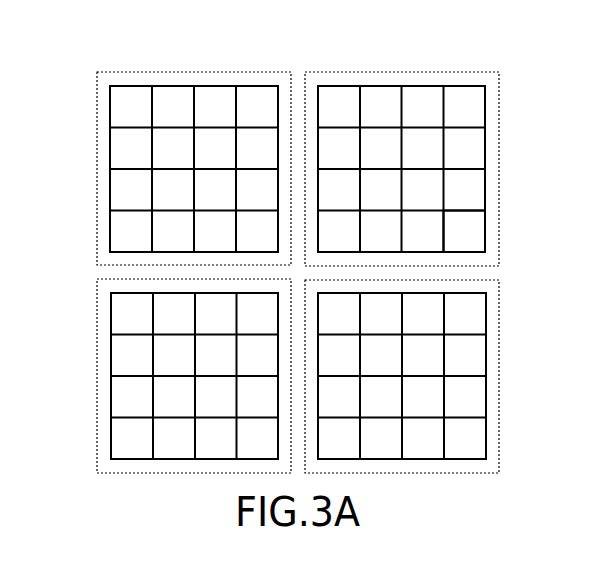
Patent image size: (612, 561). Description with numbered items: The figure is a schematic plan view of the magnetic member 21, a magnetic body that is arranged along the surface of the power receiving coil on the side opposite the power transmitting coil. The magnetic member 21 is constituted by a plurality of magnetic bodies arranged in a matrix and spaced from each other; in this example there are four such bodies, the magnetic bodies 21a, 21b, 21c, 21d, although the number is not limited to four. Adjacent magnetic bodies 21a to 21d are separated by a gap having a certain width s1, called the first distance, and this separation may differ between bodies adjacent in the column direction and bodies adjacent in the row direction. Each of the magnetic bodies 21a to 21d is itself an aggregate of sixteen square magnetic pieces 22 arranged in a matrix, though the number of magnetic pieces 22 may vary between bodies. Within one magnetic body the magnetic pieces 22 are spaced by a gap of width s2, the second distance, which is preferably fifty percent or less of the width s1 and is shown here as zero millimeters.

The magnetic member 21 is at (468, 62).
The magnetic body 21a is at (97, 170).
The magnetic body 21b is at (97, 380).
The magnetic body 21c is at (499, 170).
The magnetic body 21d is at (499, 376).
The magnetic piece 22 is at (478, 237).
The width of gap between magnetic bodies (first distance) s1 is at (317, 100).
The width of gap between magnetic pieces (second distance) s2 is at (152, 86).